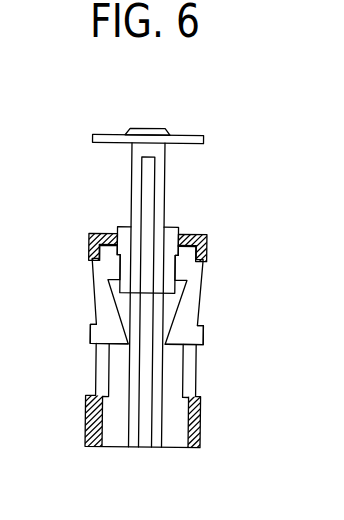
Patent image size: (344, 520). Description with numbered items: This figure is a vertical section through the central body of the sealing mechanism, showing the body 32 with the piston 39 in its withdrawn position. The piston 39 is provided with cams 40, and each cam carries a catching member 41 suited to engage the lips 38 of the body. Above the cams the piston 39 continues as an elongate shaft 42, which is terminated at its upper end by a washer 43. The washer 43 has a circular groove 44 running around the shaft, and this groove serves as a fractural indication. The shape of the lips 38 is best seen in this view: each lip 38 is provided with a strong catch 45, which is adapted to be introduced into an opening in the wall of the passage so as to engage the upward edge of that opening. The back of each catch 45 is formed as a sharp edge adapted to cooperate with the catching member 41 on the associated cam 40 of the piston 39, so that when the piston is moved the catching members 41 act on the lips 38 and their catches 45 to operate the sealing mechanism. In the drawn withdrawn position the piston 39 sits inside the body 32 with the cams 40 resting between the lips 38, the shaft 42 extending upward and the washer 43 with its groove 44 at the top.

The body 32 is at (202, 425).
The lips 38 is at (102, 299).
The piston 39 is at (163, 243).
The cams 40 is at (170, 277).
The catching members 41 is at (100, 262).
The elongate shaft 42 is at (133, 186).
The washer 43 is at (198, 135).
The circular groove 44 is at (123, 133).
The catch 45 is at (101, 336).